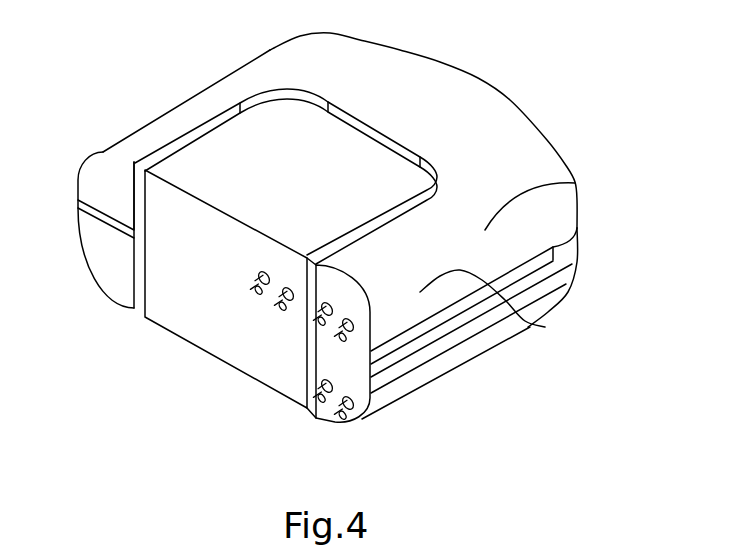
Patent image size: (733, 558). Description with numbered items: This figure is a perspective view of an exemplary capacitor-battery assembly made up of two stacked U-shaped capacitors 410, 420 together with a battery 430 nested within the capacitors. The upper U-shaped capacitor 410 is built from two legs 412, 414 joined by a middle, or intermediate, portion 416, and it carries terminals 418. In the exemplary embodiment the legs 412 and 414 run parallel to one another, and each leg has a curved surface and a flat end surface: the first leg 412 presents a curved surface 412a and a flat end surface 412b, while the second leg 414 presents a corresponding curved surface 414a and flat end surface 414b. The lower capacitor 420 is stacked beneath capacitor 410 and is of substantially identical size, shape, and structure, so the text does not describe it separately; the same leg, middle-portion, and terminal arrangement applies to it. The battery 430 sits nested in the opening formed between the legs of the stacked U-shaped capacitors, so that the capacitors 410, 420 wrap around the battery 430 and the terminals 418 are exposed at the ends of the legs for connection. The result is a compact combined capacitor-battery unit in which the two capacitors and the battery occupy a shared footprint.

The U-shaped capacitor 410 is at (478, 77).
The leg 412 is at (74, 200).
The curved surface 412a is at (84, 152).
The flat end surface 412b is at (90, 190).
The leg 414 is at (576, 183).
The curved surface 414a is at (545, 327).
The flat end surface 414b is at (338, 287).
The middle portion 416 is at (418, 62).
The terminals 418 is at (333, 332).
The U-shaped capacitor 420 is at (418, 392).
The battery 430 is at (157, 325).